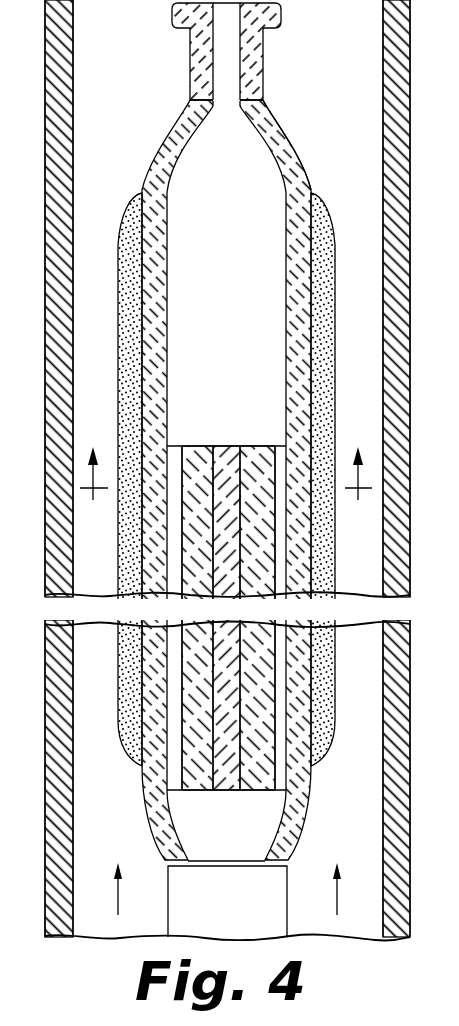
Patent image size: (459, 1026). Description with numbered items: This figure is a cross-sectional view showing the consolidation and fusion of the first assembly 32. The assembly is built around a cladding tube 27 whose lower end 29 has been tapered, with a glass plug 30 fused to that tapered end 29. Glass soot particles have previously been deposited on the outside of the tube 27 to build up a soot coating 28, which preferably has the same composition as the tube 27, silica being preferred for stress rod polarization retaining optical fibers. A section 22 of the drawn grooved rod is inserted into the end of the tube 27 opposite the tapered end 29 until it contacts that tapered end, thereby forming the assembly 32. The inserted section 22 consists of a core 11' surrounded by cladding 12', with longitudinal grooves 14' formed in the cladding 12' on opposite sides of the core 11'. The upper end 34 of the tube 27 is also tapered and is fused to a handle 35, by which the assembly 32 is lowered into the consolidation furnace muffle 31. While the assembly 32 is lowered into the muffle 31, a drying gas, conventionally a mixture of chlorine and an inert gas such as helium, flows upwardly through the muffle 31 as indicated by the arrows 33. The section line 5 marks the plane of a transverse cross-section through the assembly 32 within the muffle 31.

The section line 5- 5 is at (226, 455).
The core 11' is at (234, 598).
The cladding 12' is at (262, 584).
The longitudinal grooves 14' is at (231, 618).
The section of grooved rod 22 is at (192, 432).
The cladding tube 27 is at (298, 262).
The coating 28 is at (330, 540).
The tapered end 29 is at (303, 826).
The glass plug 30 is at (242, 912).
The consolidation furnace muffle 31 is at (383, 181).
The assembly 32 is at (113, 228).
The arrows 33 is at (119, 893).
The end of tube 34 is at (280, 150).
The handle 35 is at (262, 60).